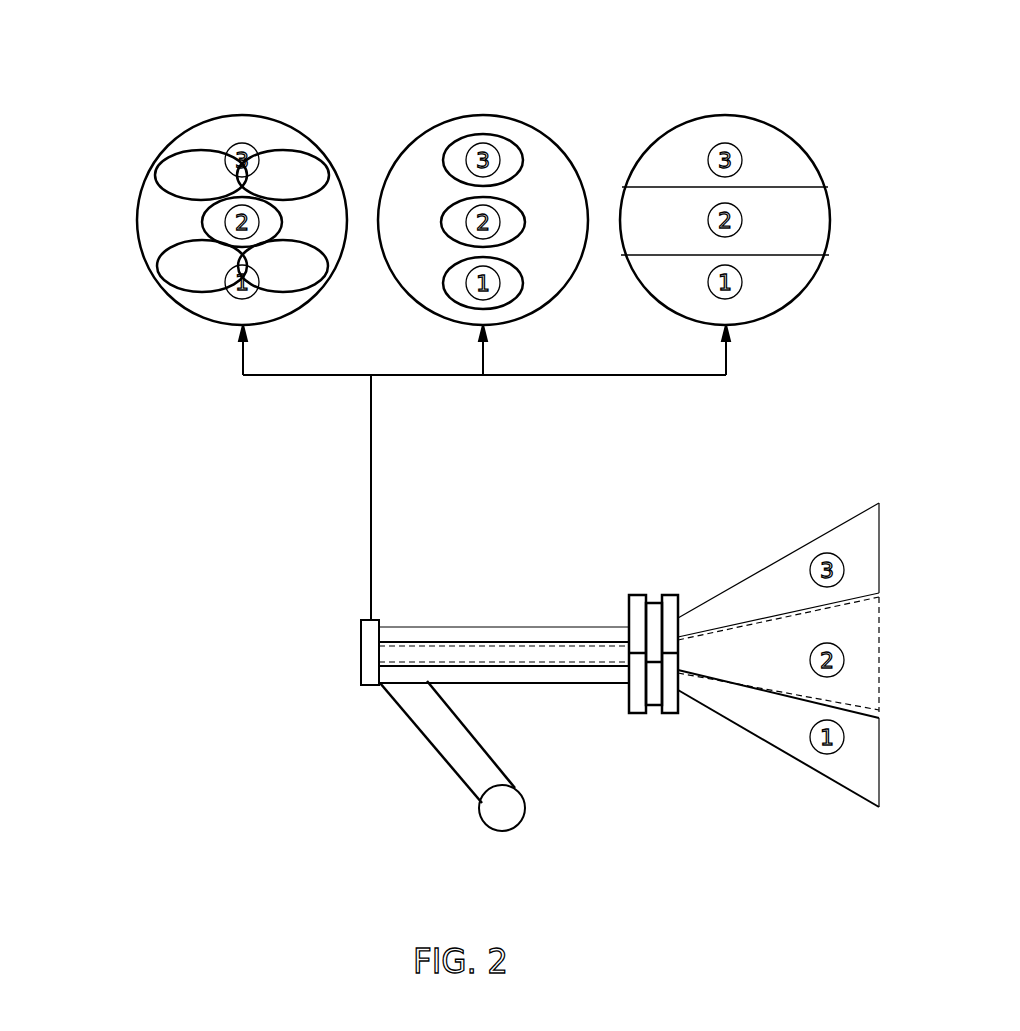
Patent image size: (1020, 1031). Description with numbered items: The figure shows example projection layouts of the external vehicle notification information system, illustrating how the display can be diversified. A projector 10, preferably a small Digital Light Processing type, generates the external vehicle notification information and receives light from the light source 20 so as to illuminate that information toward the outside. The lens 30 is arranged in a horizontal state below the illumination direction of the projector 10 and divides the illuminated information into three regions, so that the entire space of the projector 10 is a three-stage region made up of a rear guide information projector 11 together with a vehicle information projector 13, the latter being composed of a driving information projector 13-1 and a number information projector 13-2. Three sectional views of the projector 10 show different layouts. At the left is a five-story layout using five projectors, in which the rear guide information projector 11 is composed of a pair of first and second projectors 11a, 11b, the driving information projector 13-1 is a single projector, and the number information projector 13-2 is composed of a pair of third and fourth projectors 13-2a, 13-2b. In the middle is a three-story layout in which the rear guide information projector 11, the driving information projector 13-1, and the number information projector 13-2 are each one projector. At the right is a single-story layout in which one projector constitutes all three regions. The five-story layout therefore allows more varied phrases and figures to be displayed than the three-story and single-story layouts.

The projector 10 is at (320, 298).
The rear guide information projector 11 is at (228, 408).
The first projector 11a is at (197, 272).
The second projector 11b is at (285, 273).
The vehicle information projector 13 is at (626, 63).
The driving information projector 13-1 is at (207, 223).
The number information projector 13-2 is at (320, 66).
The third projector 13-2a is at (192, 172).
The fourth projector 13-2b is at (292, 176).
The light source 20 is at (502, 822).
The lens 30 is at (657, 700).